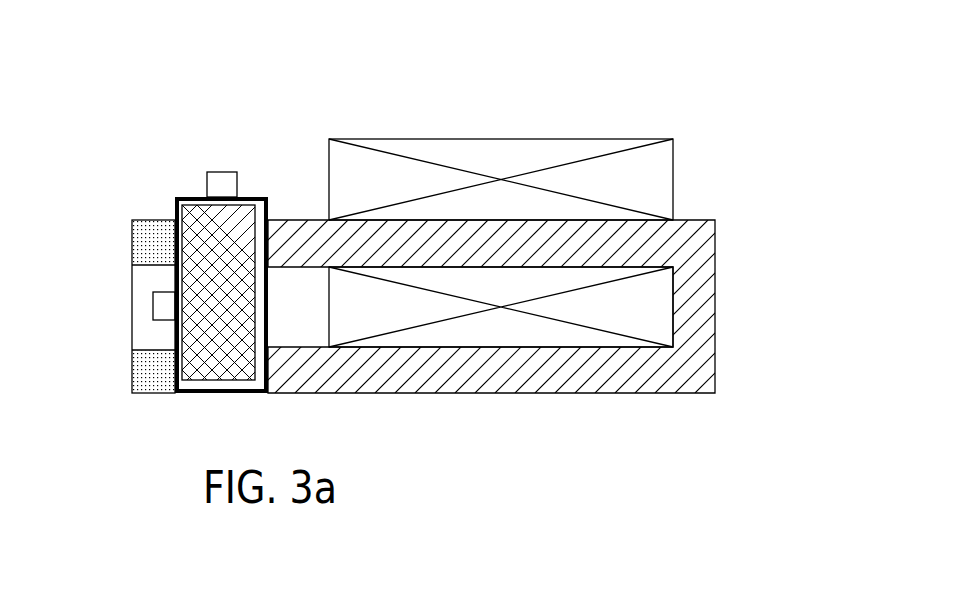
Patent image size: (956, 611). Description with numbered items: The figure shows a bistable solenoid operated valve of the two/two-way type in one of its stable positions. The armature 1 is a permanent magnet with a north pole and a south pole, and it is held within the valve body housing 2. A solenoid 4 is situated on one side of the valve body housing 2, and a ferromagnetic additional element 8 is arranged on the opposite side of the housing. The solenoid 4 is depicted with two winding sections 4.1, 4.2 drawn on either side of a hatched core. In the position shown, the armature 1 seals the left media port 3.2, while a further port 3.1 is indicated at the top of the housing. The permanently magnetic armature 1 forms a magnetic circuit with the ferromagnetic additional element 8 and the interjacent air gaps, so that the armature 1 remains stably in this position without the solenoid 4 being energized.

The armature 1 is at (262, 195).
The valve body housing 2 is at (175, 197).
The upper contact element 3.1 is at (222, 182).
The left media port 3.2 is at (158, 305).
The solenoid 4 is at (515, 140).
The lower coil winding 4.1 is at (695, 272).
The upper coil winding 4.2 is at (663, 175).
The ferromagnetic additional element 8 is at (137, 235).